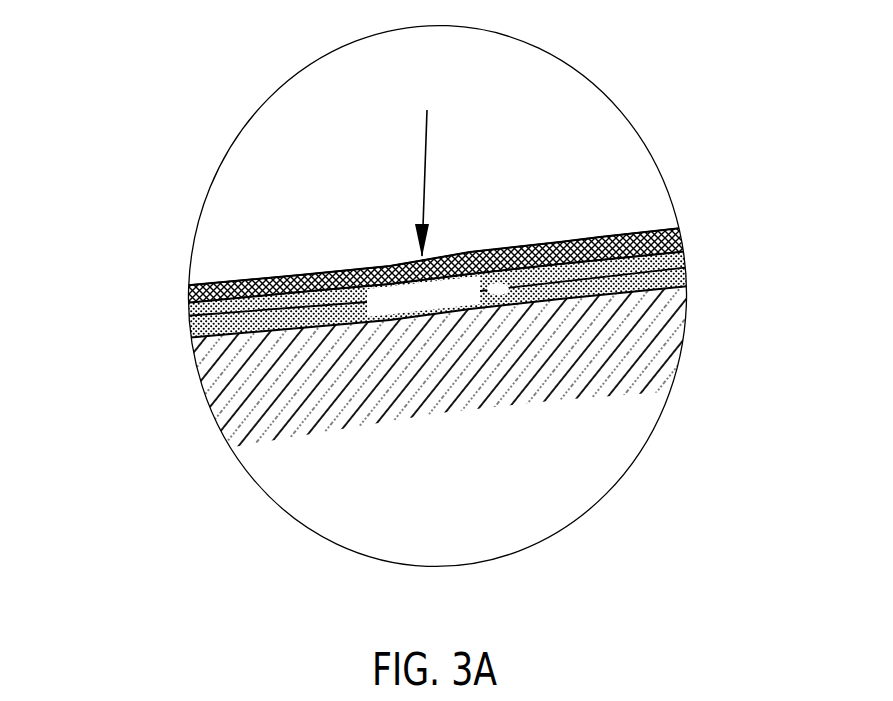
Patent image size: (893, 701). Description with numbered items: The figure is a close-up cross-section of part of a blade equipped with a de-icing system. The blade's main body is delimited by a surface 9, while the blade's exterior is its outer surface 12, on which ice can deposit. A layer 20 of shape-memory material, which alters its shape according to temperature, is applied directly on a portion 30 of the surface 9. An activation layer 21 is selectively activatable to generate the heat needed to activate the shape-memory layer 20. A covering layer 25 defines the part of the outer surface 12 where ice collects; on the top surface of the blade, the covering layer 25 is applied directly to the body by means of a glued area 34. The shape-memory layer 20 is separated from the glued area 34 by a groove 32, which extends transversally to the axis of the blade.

The surface 9 is at (388, 265).
The outer surface 12 is at (425, 150).
The layer of shape-memory material 20 is at (293, 277).
The activation layer 21 is at (207, 392).
The covering layer 25 is at (600, 237).
The portion of surface 30 is at (245, 283).
The groove 32 is at (481, 298).
The glued area 34 is at (680, 221).